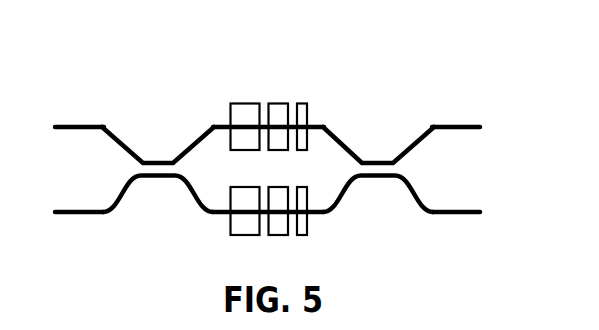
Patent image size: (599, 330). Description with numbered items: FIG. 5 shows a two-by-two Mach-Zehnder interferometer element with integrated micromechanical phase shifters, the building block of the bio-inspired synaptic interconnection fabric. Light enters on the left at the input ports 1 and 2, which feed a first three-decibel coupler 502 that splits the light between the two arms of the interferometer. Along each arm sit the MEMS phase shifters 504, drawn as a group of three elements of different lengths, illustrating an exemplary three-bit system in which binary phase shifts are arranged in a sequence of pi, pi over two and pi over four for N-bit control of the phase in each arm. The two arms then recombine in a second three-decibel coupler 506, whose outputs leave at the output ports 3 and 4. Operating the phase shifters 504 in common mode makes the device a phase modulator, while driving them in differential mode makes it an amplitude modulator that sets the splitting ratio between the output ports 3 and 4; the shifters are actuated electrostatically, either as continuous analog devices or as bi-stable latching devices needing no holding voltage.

The input port 1 is at (73, 126).
The input port 2 is at (73, 211).
The output port 3 is at (465, 128).
The output port 4 is at (465, 211).
The 3dB coupler 502 is at (162, 160).
The MEMS phase shifters 504 is at (268, 125).
The 3dB coupler 506 is at (378, 158).